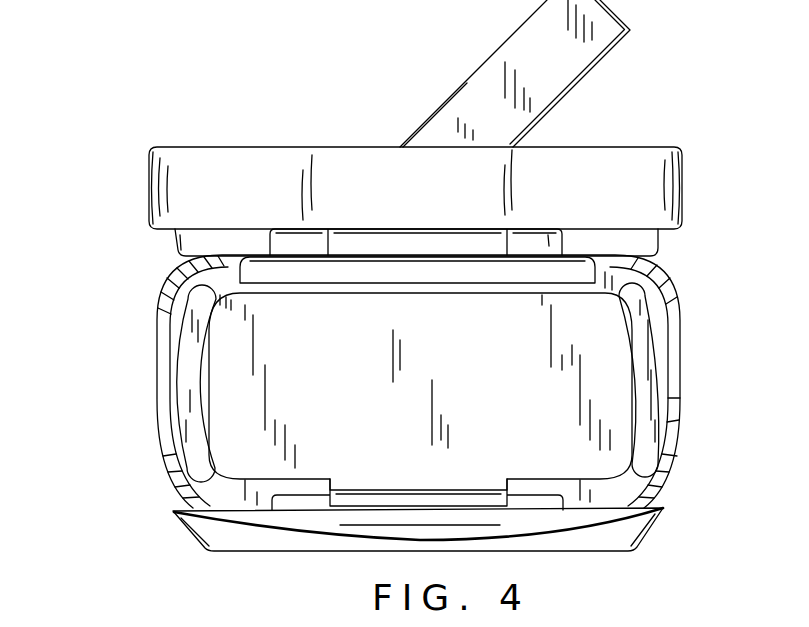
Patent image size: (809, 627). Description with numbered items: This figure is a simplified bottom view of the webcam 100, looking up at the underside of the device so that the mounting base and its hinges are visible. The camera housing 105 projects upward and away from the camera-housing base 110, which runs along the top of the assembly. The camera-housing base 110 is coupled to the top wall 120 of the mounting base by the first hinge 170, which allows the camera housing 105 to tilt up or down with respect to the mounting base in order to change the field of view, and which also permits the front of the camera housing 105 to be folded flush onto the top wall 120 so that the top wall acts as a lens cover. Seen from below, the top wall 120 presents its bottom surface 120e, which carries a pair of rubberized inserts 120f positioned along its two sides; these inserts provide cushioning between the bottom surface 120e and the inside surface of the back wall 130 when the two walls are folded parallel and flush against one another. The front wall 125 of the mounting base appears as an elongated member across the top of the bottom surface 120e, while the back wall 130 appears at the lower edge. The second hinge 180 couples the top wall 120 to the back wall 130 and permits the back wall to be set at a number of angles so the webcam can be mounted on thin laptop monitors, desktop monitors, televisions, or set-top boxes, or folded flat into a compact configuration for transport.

The webcam 100 is at (125, 511).
The camera housing 105 is at (597, 65).
The camera-housing base 110 is at (682, 186).
The top wall 120 is at (682, 396).
The bottom surface 120e is at (522, 337).
The rubberized inserts 120f is at (183, 376).
The front wall 125 is at (435, 283).
The back wall 130 is at (650, 530).
The hinge 170 is at (405, 492).
The hinge 180 is at (397, 244).